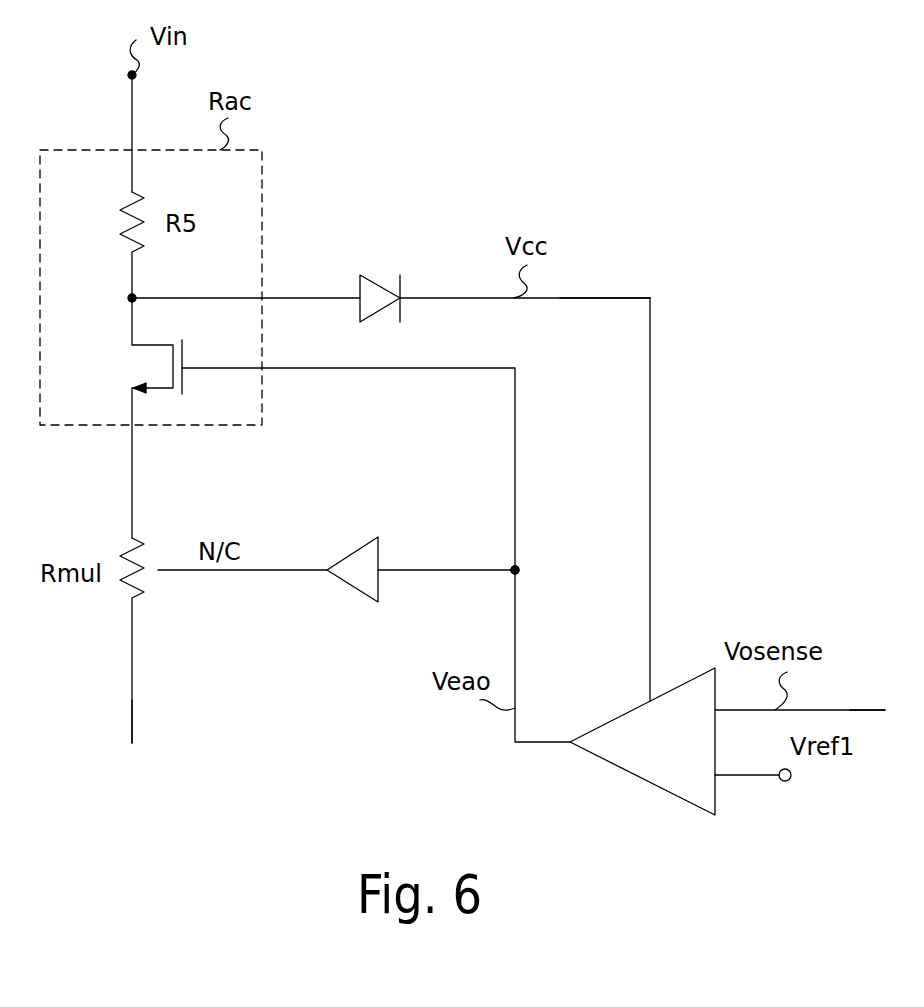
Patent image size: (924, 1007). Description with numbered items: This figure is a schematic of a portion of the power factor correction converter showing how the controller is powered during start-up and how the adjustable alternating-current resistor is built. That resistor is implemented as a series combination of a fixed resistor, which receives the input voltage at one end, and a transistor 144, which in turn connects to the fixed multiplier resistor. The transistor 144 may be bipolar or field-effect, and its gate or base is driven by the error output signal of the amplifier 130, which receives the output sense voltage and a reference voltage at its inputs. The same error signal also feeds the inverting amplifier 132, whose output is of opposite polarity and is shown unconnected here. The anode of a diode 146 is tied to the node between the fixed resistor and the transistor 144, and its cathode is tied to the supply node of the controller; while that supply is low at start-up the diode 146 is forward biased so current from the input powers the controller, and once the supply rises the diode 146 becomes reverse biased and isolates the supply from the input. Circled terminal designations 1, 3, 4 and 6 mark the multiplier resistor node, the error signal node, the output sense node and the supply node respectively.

The amplifier 130 is at (666, 790).
The amplifier 132 is at (380, 602).
The transistor 144 is at (324, 520).
The diode 146 is at (373, 275).
The terminal 1 is at (131, 676).
The terminal 3 is at (514, 566).
The terminal 4 is at (853, 710).
The terminal 6 is at (562, 298).